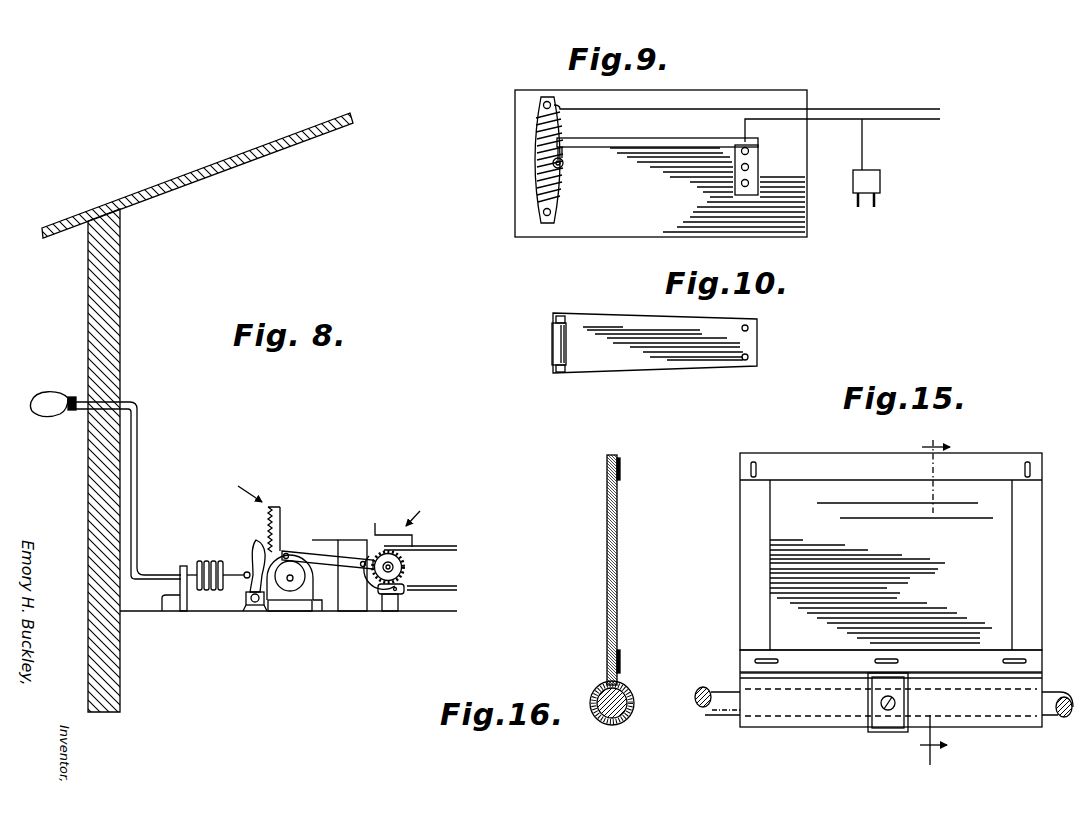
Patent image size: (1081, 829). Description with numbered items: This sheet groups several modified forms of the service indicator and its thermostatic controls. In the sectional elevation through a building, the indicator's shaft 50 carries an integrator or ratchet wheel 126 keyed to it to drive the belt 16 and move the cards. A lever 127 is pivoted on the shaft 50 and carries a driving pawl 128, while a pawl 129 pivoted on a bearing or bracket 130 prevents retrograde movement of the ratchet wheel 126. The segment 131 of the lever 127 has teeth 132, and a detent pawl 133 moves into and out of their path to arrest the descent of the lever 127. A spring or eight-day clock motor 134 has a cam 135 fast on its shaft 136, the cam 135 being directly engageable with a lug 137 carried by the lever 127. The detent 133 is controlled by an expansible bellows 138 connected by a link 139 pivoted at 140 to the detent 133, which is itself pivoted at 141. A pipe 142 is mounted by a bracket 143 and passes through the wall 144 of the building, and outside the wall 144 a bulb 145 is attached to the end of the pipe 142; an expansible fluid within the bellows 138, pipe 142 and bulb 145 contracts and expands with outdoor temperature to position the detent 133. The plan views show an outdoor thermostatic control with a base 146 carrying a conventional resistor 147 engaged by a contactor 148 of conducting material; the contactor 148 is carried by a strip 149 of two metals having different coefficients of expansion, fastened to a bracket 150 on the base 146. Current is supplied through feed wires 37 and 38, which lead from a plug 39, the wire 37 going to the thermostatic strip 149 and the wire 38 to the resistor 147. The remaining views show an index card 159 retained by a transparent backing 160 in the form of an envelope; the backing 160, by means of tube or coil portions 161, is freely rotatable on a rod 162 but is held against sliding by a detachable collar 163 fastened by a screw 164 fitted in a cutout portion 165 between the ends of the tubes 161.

In FIG. 8, the belt 16 is at (432, 546).
In FIG. 15, the belt 16 is at (932, 605).
In FIG. 9, the feed wire 37 is at (846, 120).
In FIG. 9, the feed wire 38 is at (747, 100).
In FIG. 9, the plug 39 is at (881, 179).
In FIG. 8, the shaft 50 is at (406, 589).
In FIG. 8, the ratchet wheel 126 is at (403, 565).
In FIG. 8, the lever 127 is at (328, 555).
In FIG. 8, the driving pawl 128 is at (378, 540).
In FIG. 8, the pawl 129 is at (390, 609).
In FIG. 8, the bracket 130 is at (398, 598).
In FIG. 8, the segment 131 is at (273, 505).
In FIG. 8, the teeth 132 is at (266, 516).
In FIG. 8, the detent pawl 133 is at (254, 556).
In FIG. 8, the clock motor 134 is at (305, 571).
In FIG. 8, the cam 135 is at (347, 592).
In FIG. 8, the shaft 136 is at (291, 581).
In FIG. 8, the lug 137 is at (294, 553).
In FIG. 8, the expansible bellows 138 is at (186, 602).
In FIG. 8, the link 139 is at (218, 592).
In FIG. 8, the pivot 140 is at (292, 602).
In FIG. 8, the pivot 141 is at (253, 606).
In FIG. 8, the pipe 142 is at (133, 465).
In FIG. 8, the bracket 143 is at (176, 592).
In FIG. 8, the wall 144 is at (88, 331).
In FIG. 8, the bulb 145 is at (48, 392).
In FIG. 9, the base 146 is at (661, 163).
In FIG. 9, the resistor 147 is at (529, 160).
In FIG. 9, the contactor 148 is at (563, 170).
In FIG. 10, the contactor 148 is at (552, 347).
In FIG. 9, the thermostatic strip 149 is at (639, 141).
In FIG. 10, the thermostatic strip 149 is at (645, 355).
In FIG. 9, the bracket 150 is at (756, 167).
In FIG. 15, the card 159 is at (881, 571).
In FIG. 16, the card 159 is at (618, 626).
In FIG. 15, the backing 160 is at (745, 520).
In FIG. 16, the backing 160 is at (607, 576).
In FIG. 15, the tube 161 is at (808, 719).
In FIG. 16, the tube 161 is at (617, 723).
In FIG. 15, the rod 162 is at (720, 690).
In FIG. 16, the rod 162 is at (623, 693).
In FIG. 15, the collar 163 is at (888, 728).
In FIG. 15, the screw 164 is at (896, 703).
In FIG. 15, the cutout portion 165 is at (864, 704).